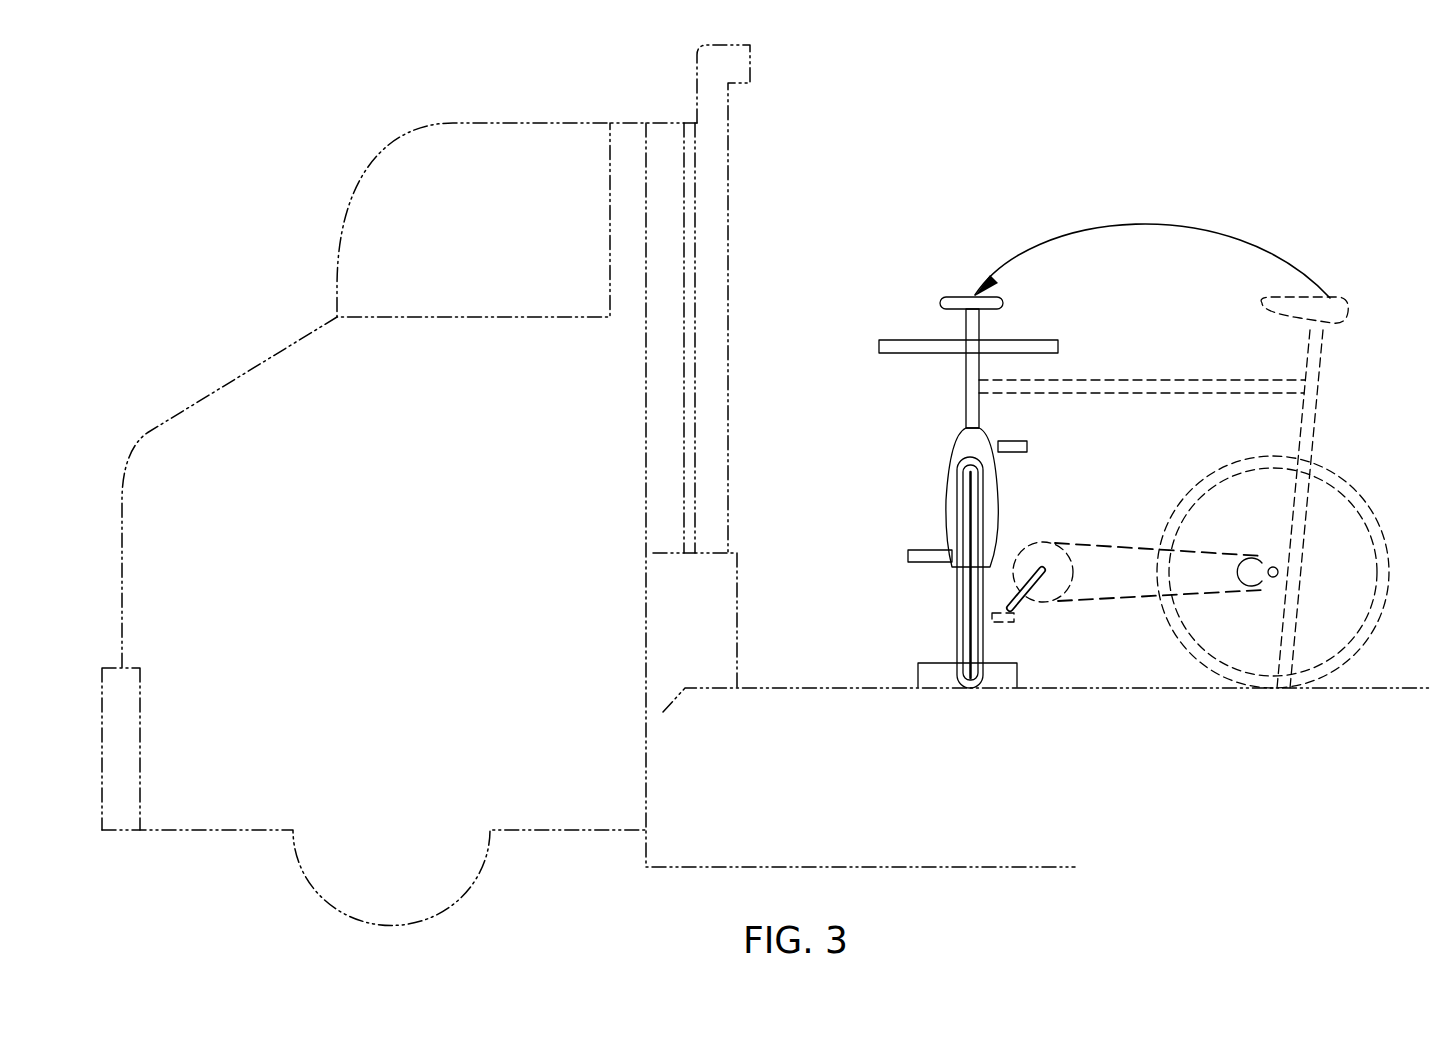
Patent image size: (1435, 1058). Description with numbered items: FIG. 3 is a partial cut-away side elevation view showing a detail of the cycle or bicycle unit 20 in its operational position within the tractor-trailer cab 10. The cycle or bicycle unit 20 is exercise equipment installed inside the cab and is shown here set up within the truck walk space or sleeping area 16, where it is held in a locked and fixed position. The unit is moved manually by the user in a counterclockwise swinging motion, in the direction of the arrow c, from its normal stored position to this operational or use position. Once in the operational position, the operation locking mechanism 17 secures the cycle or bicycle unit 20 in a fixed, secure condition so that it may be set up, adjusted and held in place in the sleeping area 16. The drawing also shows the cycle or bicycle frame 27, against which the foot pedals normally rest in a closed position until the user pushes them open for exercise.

The tractor-trailer cab 10 is at (448, 447).
The sleeping area 16 is at (838, 545).
The operation locking mechanism 17 is at (925, 663).
The cycle or bicycle unit 20 is at (955, 272).
The cycle or bicycle frame 27 is at (953, 447).
The arrow c is at (1152, 223).